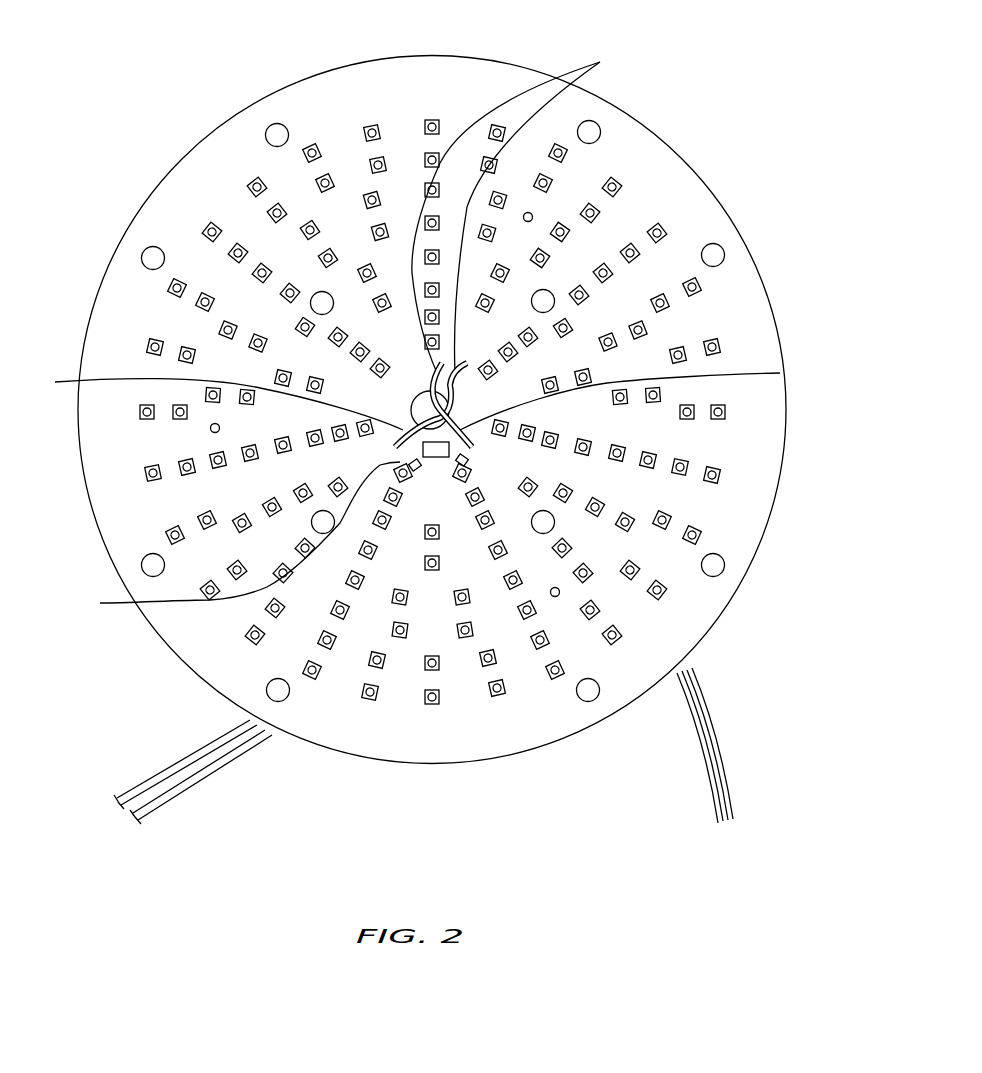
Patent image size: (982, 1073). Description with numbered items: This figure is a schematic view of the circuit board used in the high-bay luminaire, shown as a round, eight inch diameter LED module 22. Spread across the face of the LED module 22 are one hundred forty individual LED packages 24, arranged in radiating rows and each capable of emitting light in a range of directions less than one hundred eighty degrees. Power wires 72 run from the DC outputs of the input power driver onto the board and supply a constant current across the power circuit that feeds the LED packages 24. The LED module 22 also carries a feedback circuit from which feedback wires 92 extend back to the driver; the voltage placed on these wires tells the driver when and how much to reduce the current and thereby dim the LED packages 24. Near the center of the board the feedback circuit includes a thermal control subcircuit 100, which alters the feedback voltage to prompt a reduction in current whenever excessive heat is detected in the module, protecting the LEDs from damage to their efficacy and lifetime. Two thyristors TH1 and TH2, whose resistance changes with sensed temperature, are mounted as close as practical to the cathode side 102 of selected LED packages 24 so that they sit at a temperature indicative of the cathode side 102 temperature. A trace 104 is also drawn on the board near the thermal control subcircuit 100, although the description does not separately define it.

The LED module 22 is at (215, 118).
The LED packages 24 is at (433, 704).
The power wires 72 is at (768, 727).
The feedback wires 92 is at (237, 825).
The thermal control subcircuit 100 is at (447, 465).
The cathode side 102 is at (480, 470).
The trace 104 is at (230, 539).
The thyristor TH1 is at (466, 458).
The thyristor TH2 is at (388, 465).